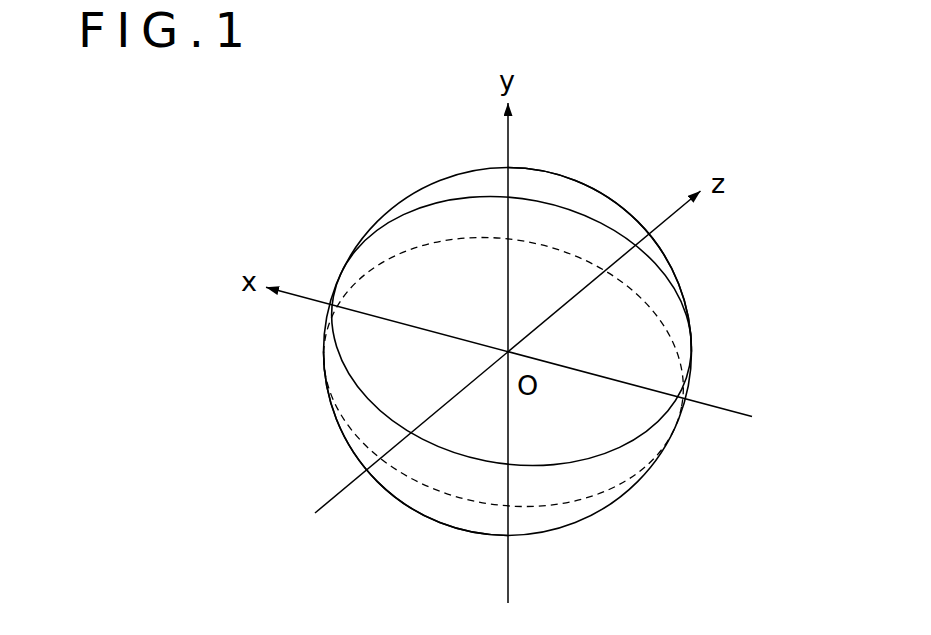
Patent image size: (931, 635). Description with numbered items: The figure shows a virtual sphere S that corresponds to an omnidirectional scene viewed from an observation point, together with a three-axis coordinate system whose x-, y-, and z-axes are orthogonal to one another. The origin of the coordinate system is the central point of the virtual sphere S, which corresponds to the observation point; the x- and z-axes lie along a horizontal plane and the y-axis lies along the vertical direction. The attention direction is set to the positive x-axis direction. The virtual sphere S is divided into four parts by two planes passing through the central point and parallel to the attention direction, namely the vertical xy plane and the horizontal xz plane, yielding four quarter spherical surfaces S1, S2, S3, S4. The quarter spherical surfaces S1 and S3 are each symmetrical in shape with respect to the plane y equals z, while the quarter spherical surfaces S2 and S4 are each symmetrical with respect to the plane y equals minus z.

The virtual sphere S is at (716, 254).
The ¼ spherical surface S1 is at (574, 172).
The ¼ spherical surface S2 is at (396, 262).
The ¼ spherical surface S3 is at (447, 528).
The ¼ spherical surface S4 is at (602, 483).